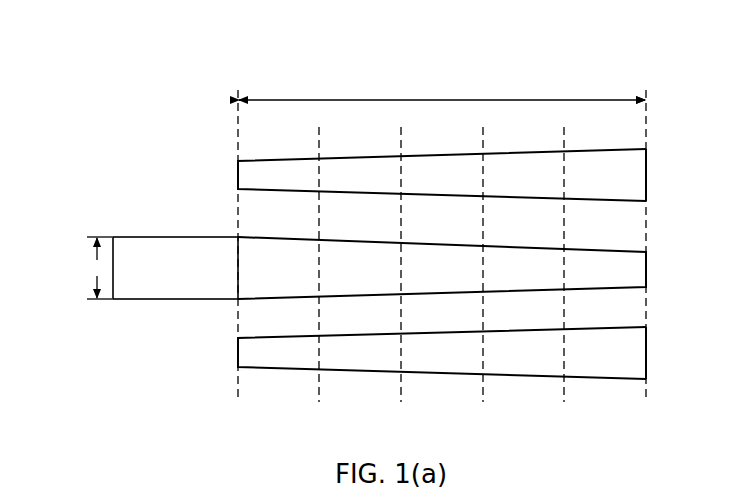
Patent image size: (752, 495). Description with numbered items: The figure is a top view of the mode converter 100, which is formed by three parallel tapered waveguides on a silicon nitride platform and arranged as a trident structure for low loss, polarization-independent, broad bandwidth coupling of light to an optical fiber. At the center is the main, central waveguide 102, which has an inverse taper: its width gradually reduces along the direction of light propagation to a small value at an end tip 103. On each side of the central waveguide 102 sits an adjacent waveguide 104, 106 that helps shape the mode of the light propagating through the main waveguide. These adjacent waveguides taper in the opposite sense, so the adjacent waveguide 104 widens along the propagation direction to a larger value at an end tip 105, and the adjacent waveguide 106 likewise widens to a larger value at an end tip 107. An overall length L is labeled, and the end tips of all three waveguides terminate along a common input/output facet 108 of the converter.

The mode converter 100 is at (185, 64).
The main central waveguide 102 is at (175, 290).
The end tip 103 is at (640, 269).
The adjacent waveguide 104 is at (525, 158).
The end tip 105 is at (640, 176).
The adjacent waveguide 106 is at (530, 372).
The end tip 107 is at (640, 356).
The input/output facet 108 is at (646, 306).